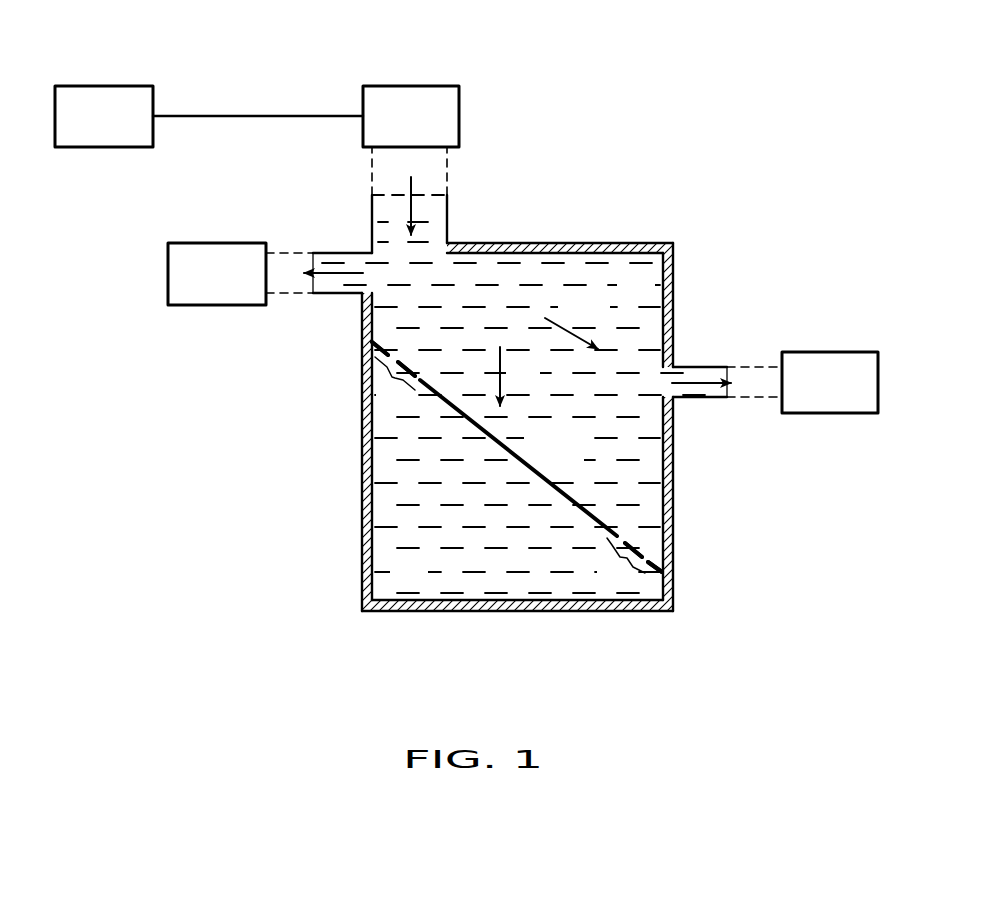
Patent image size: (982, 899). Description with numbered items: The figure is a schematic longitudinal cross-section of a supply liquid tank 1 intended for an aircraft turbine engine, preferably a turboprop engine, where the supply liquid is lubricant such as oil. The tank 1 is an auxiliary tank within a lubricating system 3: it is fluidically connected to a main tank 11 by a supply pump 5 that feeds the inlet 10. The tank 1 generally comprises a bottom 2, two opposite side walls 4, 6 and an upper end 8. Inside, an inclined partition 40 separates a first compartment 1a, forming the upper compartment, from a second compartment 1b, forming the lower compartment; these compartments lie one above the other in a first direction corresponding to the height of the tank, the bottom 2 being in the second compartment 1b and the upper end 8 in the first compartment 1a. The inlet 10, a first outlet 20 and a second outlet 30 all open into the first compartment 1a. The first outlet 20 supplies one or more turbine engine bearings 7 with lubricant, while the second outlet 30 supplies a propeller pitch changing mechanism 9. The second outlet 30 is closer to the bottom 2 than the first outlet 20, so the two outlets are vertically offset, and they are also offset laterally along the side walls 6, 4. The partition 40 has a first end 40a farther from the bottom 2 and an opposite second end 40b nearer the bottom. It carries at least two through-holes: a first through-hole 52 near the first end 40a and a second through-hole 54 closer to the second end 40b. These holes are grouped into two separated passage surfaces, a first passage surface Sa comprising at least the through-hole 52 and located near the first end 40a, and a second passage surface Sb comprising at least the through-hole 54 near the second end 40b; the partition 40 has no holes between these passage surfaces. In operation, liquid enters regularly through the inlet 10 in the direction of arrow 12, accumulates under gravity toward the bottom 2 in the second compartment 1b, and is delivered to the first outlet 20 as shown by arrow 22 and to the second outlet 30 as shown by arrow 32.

The supply liquid tank 1 is at (514, 398).
The first compartment 1a is at (636, 287).
The second compartment 1b is at (409, 575).
The bottom 2 is at (612, 611).
The lubricating system 3 is at (274, 98).
The side wall 4 is at (673, 290).
The supply pump 5 is at (447, 113).
The side wall 6 is at (362, 480).
The turbine engine bearings 7 is at (212, 287).
The upper end 8 is at (620, 243).
The propeller pitch changing mechanism 9 is at (827, 397).
The inlet 10 is at (448, 223).
The main tank 11 is at (98, 130).
The arrow 12 is at (403, 197).
The first outlet 20 is at (335, 253).
The arrow 22 is at (342, 275).
The second outlet 30 is at (700, 367).
The arrow 32 is at (693, 397).
The inclined partition 40 is at (517, 431).
The first end 40a is at (415, 356).
The second end 40b is at (625, 523).
The first through-hole 52 is at (377, 357).
The second through-hole 54 is at (645, 557).
The first passage surface Sa is at (391, 405).
The second passage surface Sb is at (613, 579).